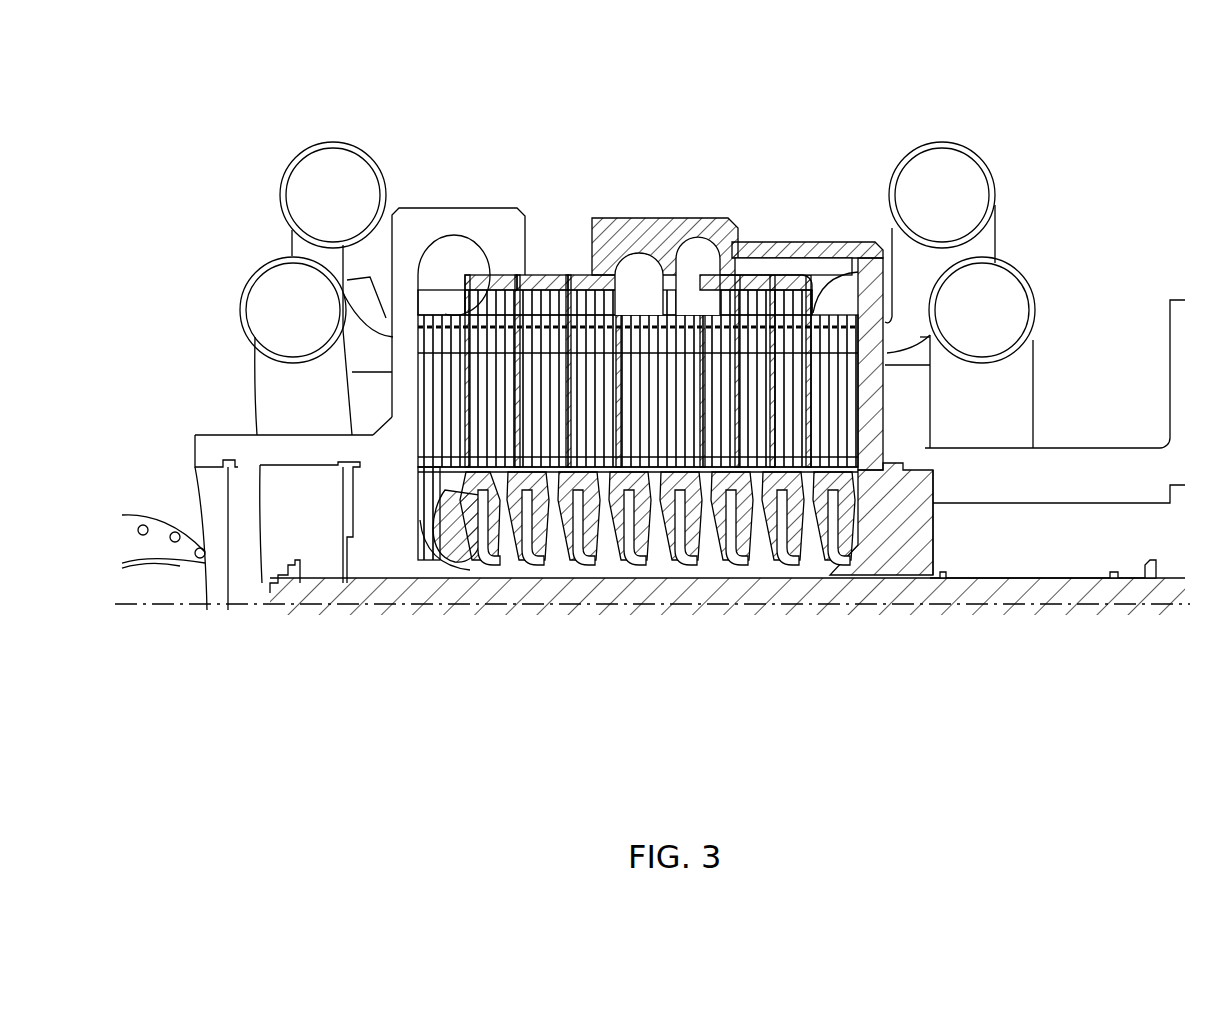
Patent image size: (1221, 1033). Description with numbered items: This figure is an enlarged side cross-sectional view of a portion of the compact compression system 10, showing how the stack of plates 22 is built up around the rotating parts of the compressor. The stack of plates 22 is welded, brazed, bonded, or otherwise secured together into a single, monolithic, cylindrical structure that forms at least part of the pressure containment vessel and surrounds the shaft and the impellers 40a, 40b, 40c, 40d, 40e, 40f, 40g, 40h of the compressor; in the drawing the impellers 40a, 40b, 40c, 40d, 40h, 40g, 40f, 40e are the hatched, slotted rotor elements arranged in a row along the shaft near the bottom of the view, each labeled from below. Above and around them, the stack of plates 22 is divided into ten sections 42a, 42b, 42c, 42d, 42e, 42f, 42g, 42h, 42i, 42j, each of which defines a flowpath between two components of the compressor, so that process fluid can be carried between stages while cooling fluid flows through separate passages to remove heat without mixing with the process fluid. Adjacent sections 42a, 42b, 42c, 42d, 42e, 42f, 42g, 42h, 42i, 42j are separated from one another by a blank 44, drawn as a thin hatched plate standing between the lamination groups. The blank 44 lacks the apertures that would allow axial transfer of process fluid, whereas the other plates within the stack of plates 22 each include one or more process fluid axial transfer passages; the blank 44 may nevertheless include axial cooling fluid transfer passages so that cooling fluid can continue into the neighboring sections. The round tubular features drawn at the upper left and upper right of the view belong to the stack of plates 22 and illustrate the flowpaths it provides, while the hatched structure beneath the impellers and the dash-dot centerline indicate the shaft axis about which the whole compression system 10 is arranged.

The compact compression system 10 is at (440, 73).
The stack of plates 22 is at (337, 245).
The blank 44 is at (467, 365).
The section 42a is at (460, 292).
The section 42b is at (502, 282).
The section 42c is at (547, 283).
The section 42d is at (590, 283).
The section 42e is at (657, 317).
The section 42f is at (847, 360).
The section 42g is at (885, 265).
The section 42h is at (773, 300).
The section 42i is at (740, 258).
The section 42j is at (695, 313).
The impeller 40a is at (473, 577).
The impeller 40b is at (540, 577).
The impeller 40c is at (583, 577).
The impeller 40d is at (643, 577).
The impeller 40e is at (838, 577).
The impeller 40f is at (777, 577).
The impeller 40g is at (750, 577).
The impeller 40h is at (700, 577).